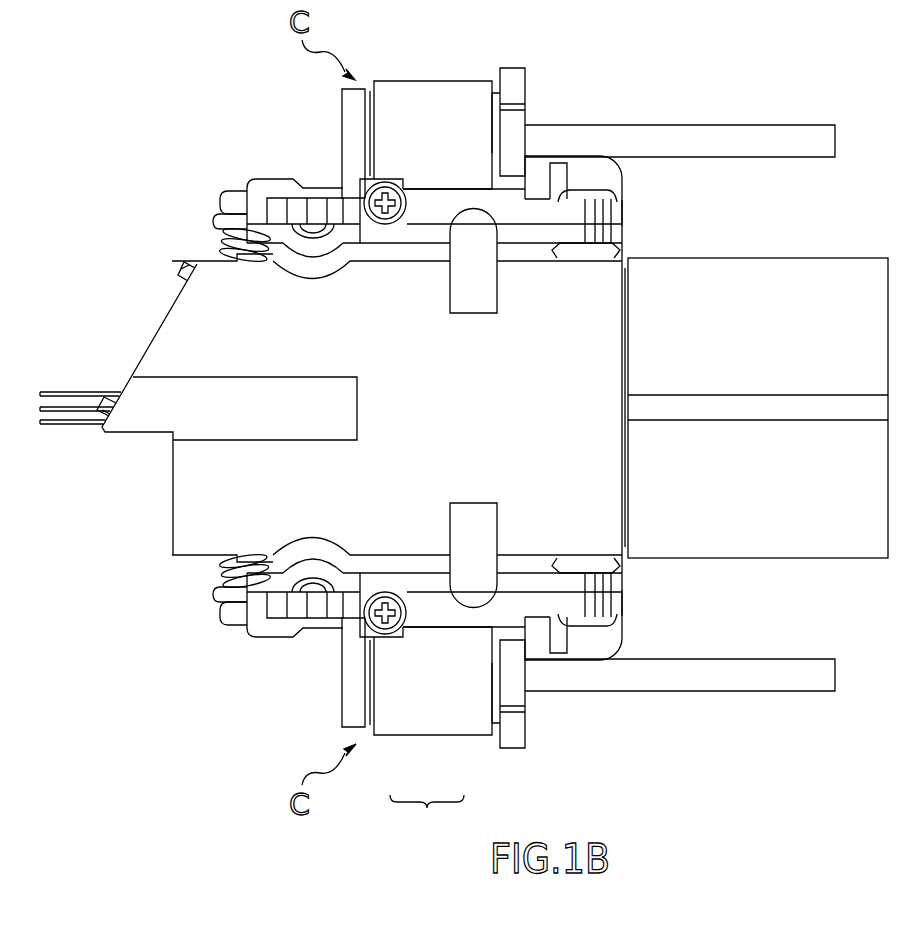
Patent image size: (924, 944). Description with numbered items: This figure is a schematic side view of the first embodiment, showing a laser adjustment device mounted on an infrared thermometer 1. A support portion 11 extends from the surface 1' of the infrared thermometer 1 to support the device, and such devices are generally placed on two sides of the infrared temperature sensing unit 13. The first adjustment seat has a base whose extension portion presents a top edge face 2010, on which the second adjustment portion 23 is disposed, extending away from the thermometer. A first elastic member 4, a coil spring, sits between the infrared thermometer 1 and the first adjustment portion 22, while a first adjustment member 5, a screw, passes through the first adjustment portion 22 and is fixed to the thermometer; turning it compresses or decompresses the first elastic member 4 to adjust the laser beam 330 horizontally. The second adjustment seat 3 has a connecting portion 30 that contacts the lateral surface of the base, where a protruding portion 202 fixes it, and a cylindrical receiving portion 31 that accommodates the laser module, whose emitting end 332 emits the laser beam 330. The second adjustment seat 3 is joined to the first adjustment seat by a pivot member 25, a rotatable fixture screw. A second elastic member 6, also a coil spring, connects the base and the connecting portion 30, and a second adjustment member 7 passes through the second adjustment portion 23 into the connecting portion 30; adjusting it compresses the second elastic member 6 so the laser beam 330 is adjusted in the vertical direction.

The infrared thermometer 1 is at (359, 408).
The surface 1' is at (758, 408).
The infrared temperature sensing unit 13 is at (50, 427).
The support portion 11 is at (477, 520).
The top edge face 2010 is at (428, 565).
The second adjustment portion 23 is at (367, 583).
The second adjustment member 7 is at (387, 590).
The second elastic member 6 is at (315, 625).
The protruding portion 202 is at (258, 627).
The first adjustment portion 22 is at (222, 594).
The first adjustment member 5 is at (222, 630).
The first elastic member 4 is at (204, 580).
The receiving portion 31 is at (395, 717).
The connecting portion 30 is at (463, 617).
The second adjustment seat 3 is at (427, 814).
The emitting end 332 is at (522, 730).
The laser beam 330 is at (797, 685).
The pivot member 25 is at (590, 625).